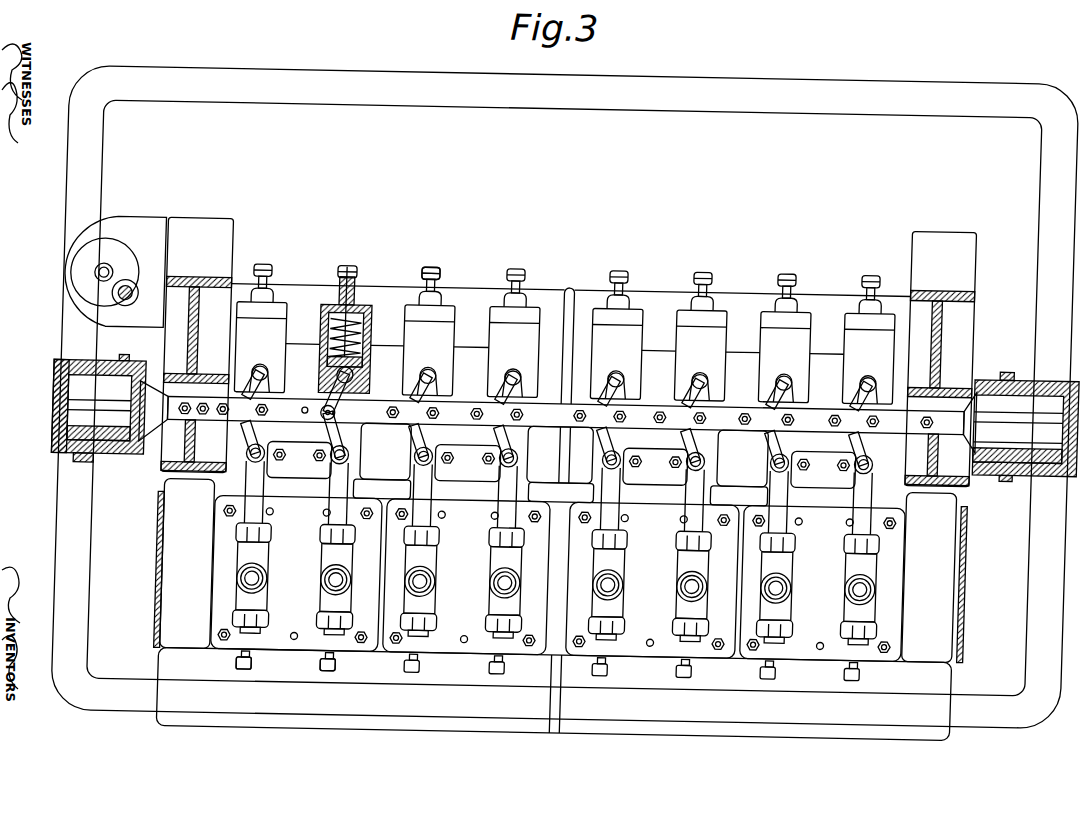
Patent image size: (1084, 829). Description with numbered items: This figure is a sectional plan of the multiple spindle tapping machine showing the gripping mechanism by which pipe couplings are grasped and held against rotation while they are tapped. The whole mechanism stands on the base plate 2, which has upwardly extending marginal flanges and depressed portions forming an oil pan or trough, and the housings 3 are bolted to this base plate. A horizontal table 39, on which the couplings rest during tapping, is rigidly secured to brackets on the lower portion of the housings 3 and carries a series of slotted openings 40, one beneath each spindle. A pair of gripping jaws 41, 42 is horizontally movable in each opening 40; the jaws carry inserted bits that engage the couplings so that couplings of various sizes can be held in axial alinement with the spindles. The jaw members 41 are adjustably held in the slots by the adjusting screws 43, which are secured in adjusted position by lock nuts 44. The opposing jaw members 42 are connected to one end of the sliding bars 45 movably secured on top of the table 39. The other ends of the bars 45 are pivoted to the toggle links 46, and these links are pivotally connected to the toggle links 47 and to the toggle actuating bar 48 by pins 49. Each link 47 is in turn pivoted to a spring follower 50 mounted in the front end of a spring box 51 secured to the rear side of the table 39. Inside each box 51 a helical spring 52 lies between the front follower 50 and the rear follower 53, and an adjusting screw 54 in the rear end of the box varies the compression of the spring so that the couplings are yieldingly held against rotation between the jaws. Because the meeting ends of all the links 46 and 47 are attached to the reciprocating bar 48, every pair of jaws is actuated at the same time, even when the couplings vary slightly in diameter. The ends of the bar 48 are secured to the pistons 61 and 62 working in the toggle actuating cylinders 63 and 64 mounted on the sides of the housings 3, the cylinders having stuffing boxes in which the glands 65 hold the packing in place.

The base plate 2 is at (565, 396).
The housings 3 is at (205, 272).
The table 39 is at (478, 650).
The slotted openings 40 is at (283, 577).
The jaw members 41 is at (283, 600).
The opposing jaw members 42 is at (283, 559).
The adjusting screws 43 is at (343, 668).
The lock nuts 44 is at (280, 542).
The sliding bars 45 is at (274, 524).
The toggle links 46 is at (427, 437).
The toggle links 47 is at (422, 386).
The toggle actuating bar 48 is at (565, 414).
The pins 49 is at (333, 403).
The spring followers 50 is at (372, 354).
The spring boxes 51 is at (565, 334).
The helical spring 52 is at (372, 326).
The rear followers 53 is at (360, 290).
The adjusting screw 54 is at (432, 262).
The piston 61 is at (110, 406).
The piston 62 is at (1020, 428).
The toggle actuating cylinder 63 is at (62, 433).
The toggle actuating cylinder 64 is at (1022, 463).
The glands 65 is at (142, 455).